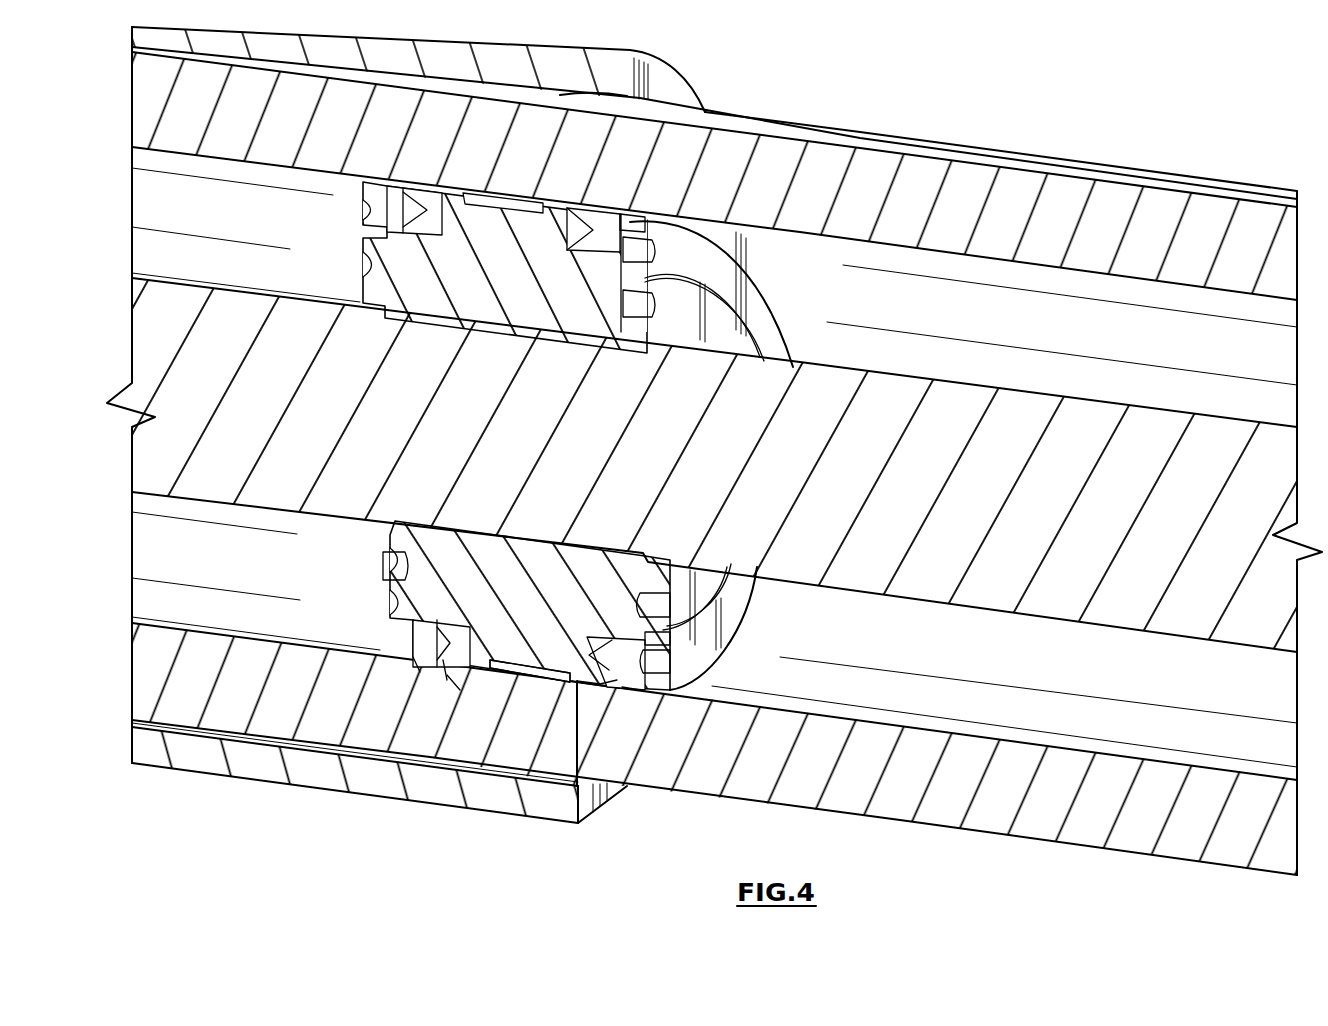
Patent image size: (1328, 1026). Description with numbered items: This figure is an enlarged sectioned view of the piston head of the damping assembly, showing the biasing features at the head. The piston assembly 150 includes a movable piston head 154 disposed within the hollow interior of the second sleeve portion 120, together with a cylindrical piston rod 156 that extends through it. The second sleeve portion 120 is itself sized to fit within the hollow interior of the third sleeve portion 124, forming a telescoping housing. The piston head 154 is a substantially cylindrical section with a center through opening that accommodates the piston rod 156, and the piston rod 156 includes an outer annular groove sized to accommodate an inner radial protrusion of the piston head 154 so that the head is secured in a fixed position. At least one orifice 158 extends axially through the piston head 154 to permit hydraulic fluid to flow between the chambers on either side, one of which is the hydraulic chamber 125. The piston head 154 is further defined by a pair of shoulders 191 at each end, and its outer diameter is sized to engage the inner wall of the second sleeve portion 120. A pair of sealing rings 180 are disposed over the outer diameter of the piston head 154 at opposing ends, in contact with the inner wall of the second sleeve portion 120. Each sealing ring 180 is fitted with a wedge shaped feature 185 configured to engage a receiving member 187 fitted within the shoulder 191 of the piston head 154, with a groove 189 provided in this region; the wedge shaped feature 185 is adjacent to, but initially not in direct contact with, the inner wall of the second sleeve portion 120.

The second sleeve portion 120 is at (797, 133).
The third sleeve portion 124 is at (485, 797).
The hydraulic chamber 125 is at (248, 610).
The piston assembly 150 is at (972, 392).
The piston head 154 is at (537, 620).
The piston rod 156 is at (208, 465).
The orifice 158 is at (647, 303).
The sealing ring 180 is at (390, 643).
The wedge shaped feature 185 is at (421, 661).
The receiving member 187 is at (447, 676).
The groove 189 is at (444, 661).
The shoulder 191 is at (476, 669).